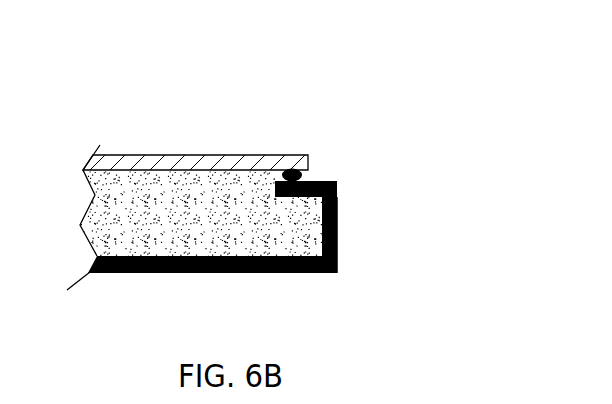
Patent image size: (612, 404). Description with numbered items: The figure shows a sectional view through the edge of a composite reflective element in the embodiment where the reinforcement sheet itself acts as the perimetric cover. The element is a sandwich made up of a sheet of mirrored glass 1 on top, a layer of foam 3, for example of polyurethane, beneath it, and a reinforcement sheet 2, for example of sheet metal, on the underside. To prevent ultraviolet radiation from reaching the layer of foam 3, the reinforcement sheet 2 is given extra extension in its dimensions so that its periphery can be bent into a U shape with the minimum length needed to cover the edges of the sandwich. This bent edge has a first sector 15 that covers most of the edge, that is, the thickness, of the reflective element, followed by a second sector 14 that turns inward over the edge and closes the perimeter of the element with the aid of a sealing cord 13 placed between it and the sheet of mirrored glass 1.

The sheet of mirrored glass 1 is at (243, 153).
The reinforcement sheet 2 is at (305, 266).
The layer of foam 3 is at (145, 188).
The sealing cord 13 is at (308, 172).
The second sector 14 is at (340, 181).
The first sector 15 is at (340, 260).